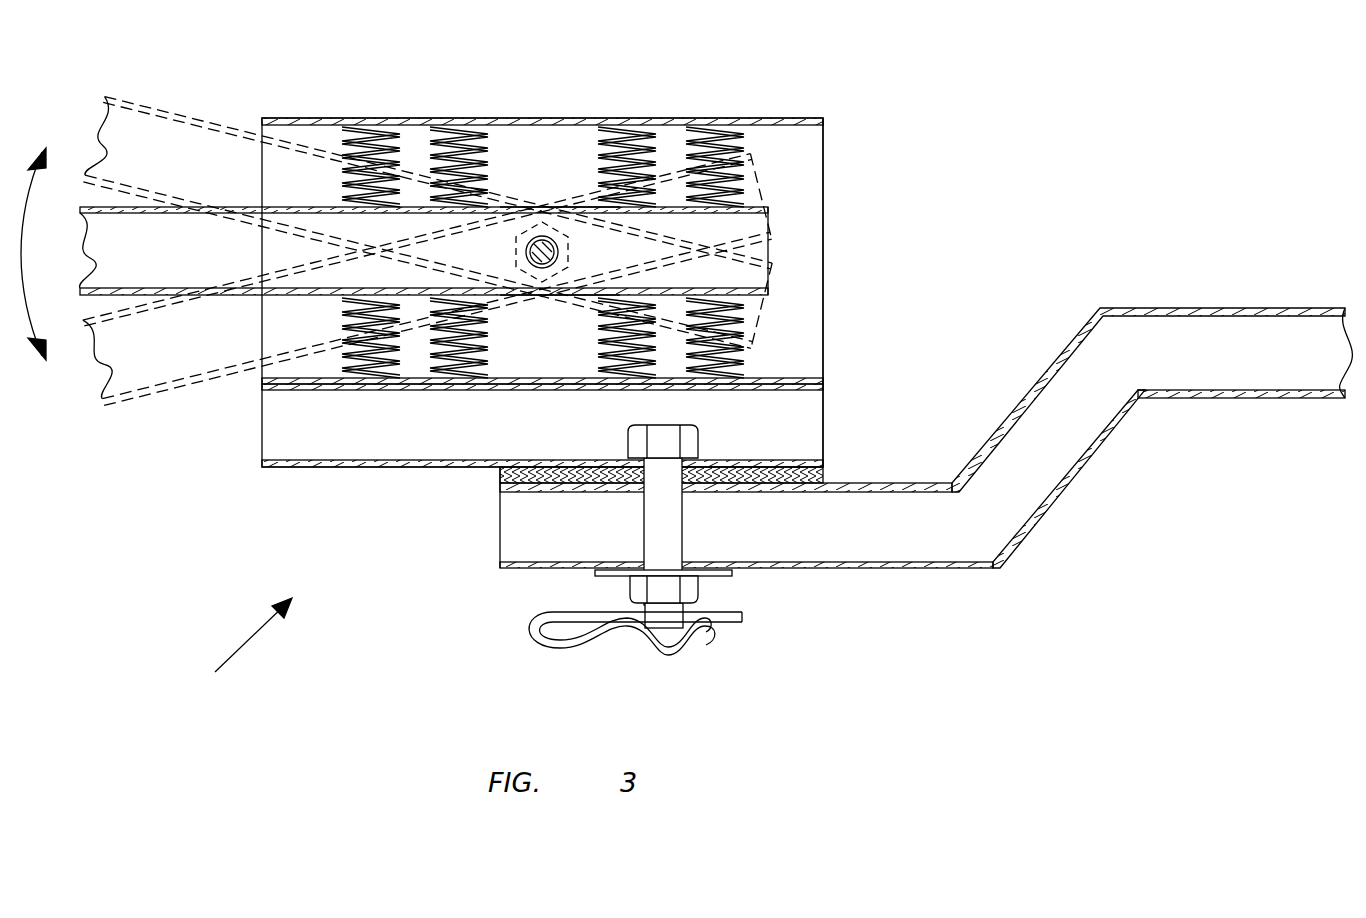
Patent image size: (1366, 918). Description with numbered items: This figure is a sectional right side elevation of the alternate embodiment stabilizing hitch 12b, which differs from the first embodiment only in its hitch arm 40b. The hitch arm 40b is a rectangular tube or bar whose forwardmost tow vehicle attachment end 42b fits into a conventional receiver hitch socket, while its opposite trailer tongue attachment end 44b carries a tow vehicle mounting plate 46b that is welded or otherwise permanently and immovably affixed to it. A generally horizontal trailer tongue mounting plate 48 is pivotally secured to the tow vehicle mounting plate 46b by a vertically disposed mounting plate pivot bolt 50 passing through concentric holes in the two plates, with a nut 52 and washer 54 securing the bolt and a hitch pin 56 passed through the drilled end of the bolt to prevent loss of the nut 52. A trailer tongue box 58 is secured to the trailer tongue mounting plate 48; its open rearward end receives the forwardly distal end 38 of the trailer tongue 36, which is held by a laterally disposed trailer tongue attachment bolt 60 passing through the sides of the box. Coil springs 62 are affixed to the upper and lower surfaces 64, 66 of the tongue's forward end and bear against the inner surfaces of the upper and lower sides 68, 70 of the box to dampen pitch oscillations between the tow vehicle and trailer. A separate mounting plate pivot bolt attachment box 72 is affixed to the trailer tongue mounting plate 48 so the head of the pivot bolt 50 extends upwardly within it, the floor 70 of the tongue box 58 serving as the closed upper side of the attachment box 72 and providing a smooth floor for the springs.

The stabilizing hitch 12b is at (228, 652).
The trailer tongue 36 is at (108, 207).
The forwardly distal end 38 is at (512, 122).
The hitch arm 40b is at (1092, 455).
The tow vehicle attachment end 42b is at (1217, 397).
The trailer tongue attachment end 44b is at (500, 540).
The tow vehicle mounting plate 46b is at (500, 480).
The trailer tongue mounting plate 48 is at (497, 468).
The mounting plate pivot bolt 50 is at (684, 547).
The nut 52 is at (700, 603).
The washer 54 is at (603, 578).
The hitch pin 56 is at (580, 655).
The trailer tongue box 58 is at (823, 250).
The trailer tongue attachment bolt 60 is at (560, 262).
The coil springs 62 is at (345, 140).
The upper surface 64 is at (560, 207).
The lower surface 66 is at (543, 295).
The upper surface of trailer tongue box 68 is at (287, 126).
The lower surface of trailer tongue box 70 is at (295, 380).
The mounting plate pivot bolt attachment box 72 is at (300, 467).